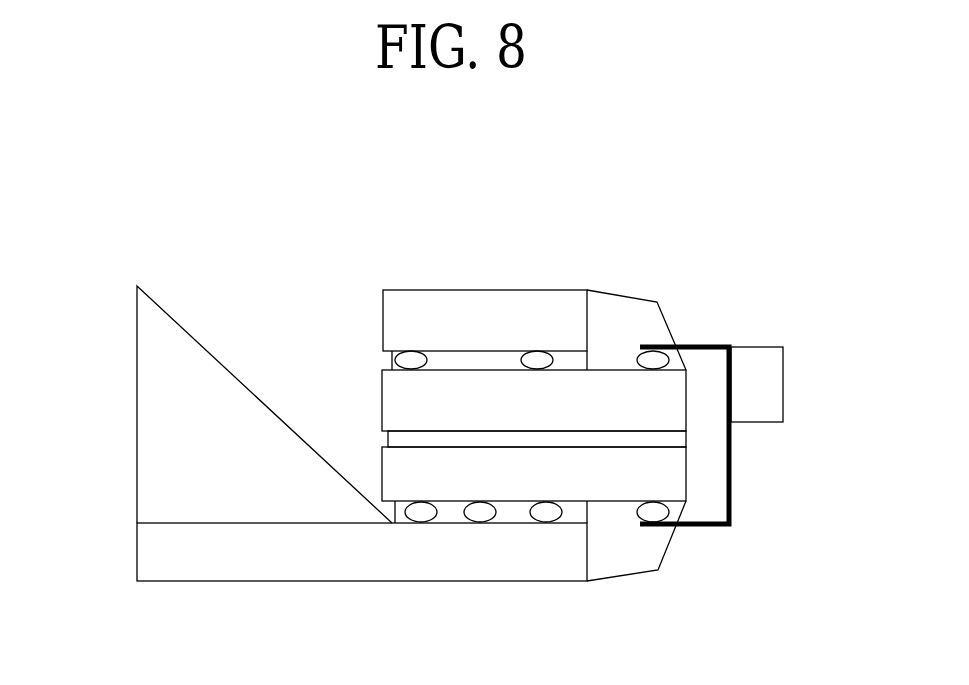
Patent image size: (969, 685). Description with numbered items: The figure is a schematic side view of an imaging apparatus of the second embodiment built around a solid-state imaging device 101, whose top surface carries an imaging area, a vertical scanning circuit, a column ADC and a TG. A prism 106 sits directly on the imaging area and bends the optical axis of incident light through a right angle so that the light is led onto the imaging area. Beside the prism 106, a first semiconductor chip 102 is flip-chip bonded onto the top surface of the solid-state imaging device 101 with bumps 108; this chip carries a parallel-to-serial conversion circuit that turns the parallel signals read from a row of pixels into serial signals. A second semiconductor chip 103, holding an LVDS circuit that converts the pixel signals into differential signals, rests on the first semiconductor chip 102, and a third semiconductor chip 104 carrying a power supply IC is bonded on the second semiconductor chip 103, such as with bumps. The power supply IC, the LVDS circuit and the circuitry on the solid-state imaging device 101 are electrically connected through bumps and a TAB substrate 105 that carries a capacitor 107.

The solid-state imaging device 101 is at (212, 581).
The first semiconductor chip 102 is at (677, 473).
The second semiconductor chip 103 is at (677, 402).
The third semiconductor chip 104 is at (408, 290).
The TAB substrate 105 is at (731, 470).
The prism 106 is at (137, 397).
The capacitor 107 is at (783, 382).
The bumps 108 is at (421, 516).